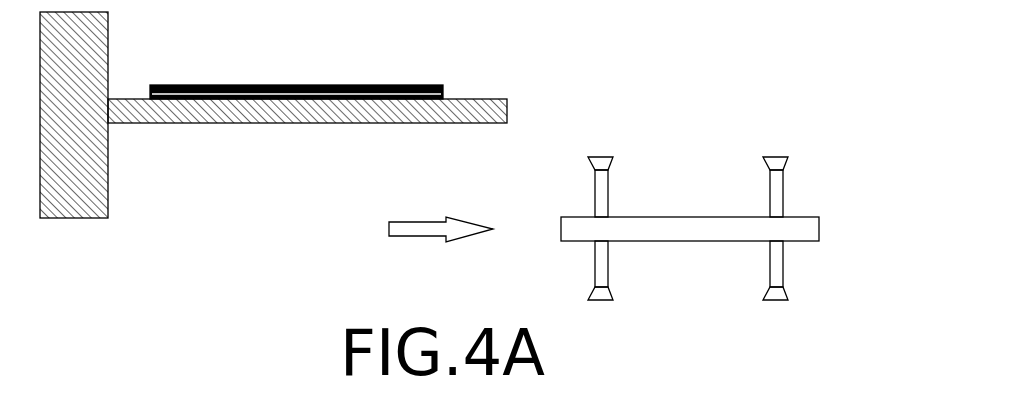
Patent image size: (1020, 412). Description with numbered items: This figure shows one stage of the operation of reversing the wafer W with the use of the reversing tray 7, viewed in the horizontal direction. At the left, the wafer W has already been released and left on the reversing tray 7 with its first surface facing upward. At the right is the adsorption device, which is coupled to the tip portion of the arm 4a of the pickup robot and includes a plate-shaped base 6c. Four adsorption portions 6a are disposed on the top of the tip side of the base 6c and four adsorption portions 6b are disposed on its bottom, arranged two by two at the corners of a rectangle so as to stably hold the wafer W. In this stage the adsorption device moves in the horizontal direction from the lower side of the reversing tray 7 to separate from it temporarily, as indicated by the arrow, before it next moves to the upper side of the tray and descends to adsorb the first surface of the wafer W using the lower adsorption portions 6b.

The reversing tray 7 is at (132, 98).
The wafer W is at (230, 85).
The arm 4a is at (734, 258).
The adsorption portions 6a is at (608, 188).
The adsorption portions 6b is at (608, 265).
The base 6c is at (819, 229).